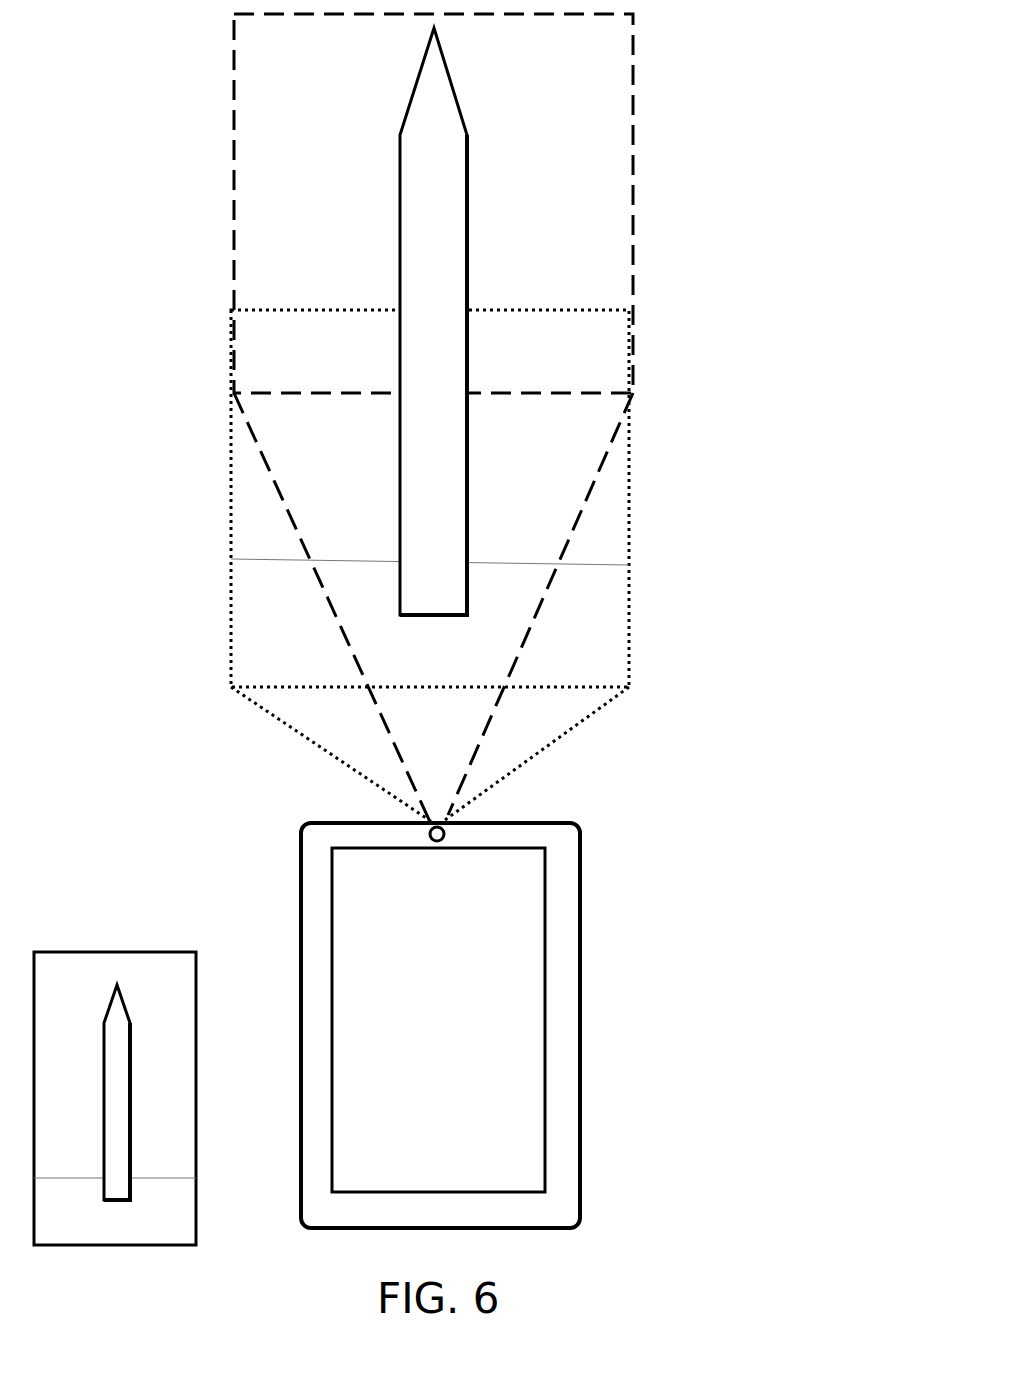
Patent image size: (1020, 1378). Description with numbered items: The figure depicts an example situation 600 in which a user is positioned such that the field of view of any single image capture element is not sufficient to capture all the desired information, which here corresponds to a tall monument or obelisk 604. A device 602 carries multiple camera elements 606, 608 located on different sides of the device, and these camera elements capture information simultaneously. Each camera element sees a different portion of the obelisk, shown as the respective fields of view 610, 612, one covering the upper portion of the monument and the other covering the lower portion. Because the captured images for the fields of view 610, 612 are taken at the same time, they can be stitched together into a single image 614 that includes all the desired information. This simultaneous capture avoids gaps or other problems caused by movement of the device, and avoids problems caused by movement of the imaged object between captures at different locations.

The example situation 600 is at (820, 115).
The device 602 is at (580, 990).
The monument or obelisk 604 is at (467, 485).
The camera element 606 is at (431, 835).
The camera element 608 is at (440, 824).
The field of view 610 is at (633, 232).
The field of view 612 is at (629, 515).
The single image 614 is at (113, 952).